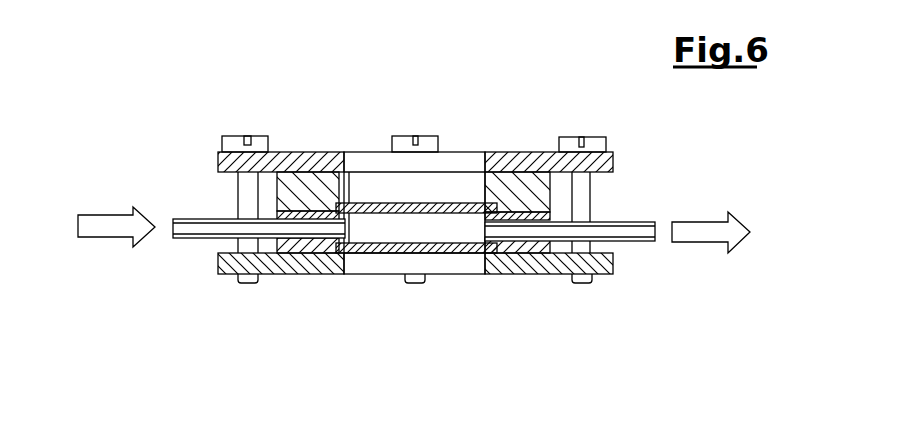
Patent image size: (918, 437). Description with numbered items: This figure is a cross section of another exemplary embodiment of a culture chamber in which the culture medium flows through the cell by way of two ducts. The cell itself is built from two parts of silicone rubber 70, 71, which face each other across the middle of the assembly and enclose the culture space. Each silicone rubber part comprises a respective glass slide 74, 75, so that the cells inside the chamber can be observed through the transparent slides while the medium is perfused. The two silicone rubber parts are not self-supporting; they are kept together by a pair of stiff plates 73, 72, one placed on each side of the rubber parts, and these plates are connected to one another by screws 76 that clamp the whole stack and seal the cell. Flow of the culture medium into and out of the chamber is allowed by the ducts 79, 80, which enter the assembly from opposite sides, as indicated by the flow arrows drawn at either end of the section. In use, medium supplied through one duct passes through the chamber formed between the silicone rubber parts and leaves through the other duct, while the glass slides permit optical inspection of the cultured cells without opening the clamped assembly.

The part of silicone rubber 70 is at (298, 188).
The part of silicone rubber 71 is at (293, 247).
The stiff plate 72 is at (537, 265).
The stiff plate 73 is at (527, 158).
The glass slide 74 is at (402, 250).
The glass slide 75 is at (393, 207).
The screws 76 is at (237, 142).
The duct 79 is at (198, 225).
The duct 80 is at (628, 232).